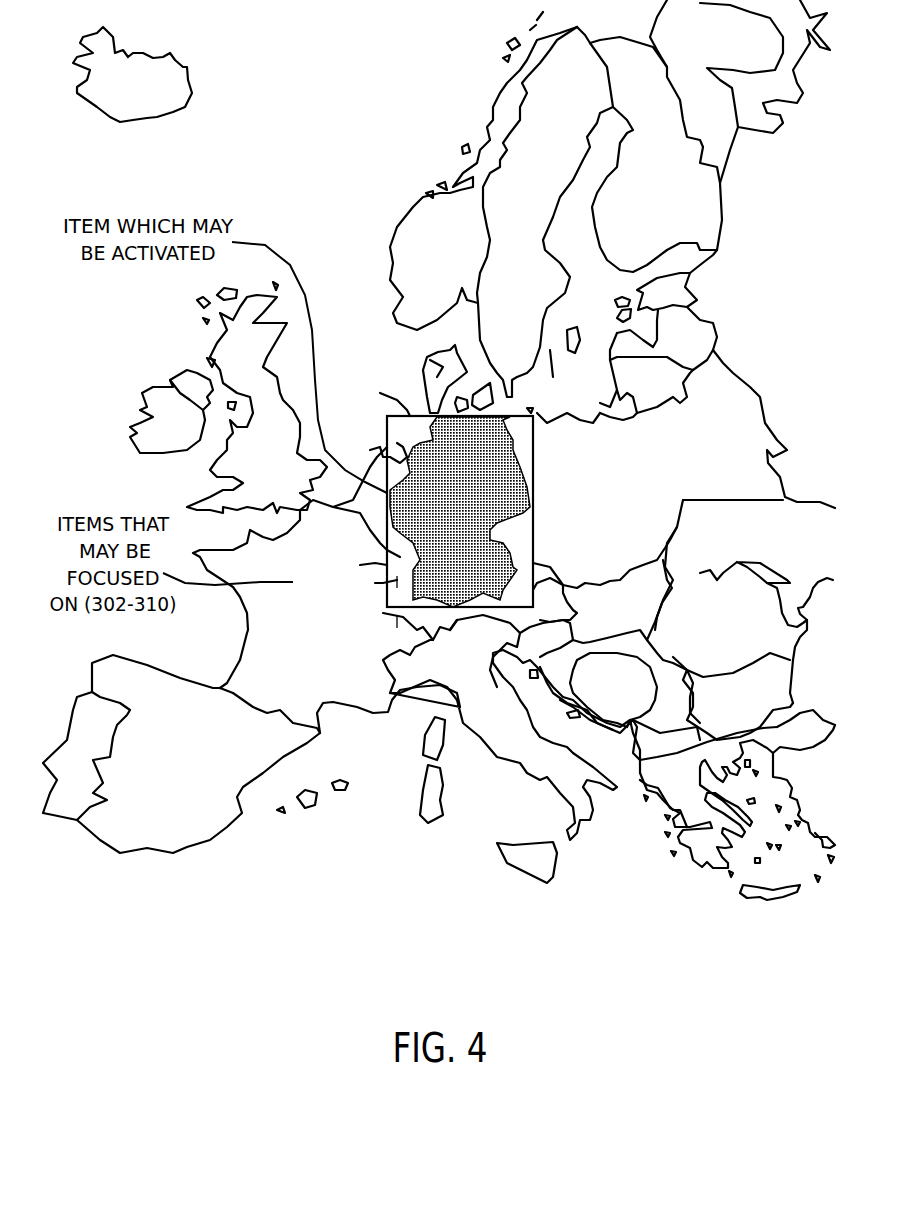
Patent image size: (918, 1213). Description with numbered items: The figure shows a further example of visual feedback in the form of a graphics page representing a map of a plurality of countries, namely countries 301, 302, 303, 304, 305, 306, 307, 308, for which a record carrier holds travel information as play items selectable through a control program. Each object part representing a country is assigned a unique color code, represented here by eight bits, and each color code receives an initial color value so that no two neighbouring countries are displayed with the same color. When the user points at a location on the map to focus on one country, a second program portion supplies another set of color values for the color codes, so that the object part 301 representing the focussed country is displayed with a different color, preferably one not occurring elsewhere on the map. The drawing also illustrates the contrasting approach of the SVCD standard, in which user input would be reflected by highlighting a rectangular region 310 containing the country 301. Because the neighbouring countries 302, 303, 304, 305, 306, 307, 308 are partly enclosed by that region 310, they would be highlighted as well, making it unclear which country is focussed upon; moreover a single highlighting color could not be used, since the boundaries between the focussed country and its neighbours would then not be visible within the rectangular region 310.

The country 301 is at (460, 512).
The country 302 is at (387, 447).
The country 303 is at (387, 565).
The country 304 is at (397, 582).
The country 305 is at (397, 622).
The country 306 is at (533, 595).
The country 307 is at (533, 522).
The country 308 is at (533, 433).
The rectangular region 310 is at (422, 417).